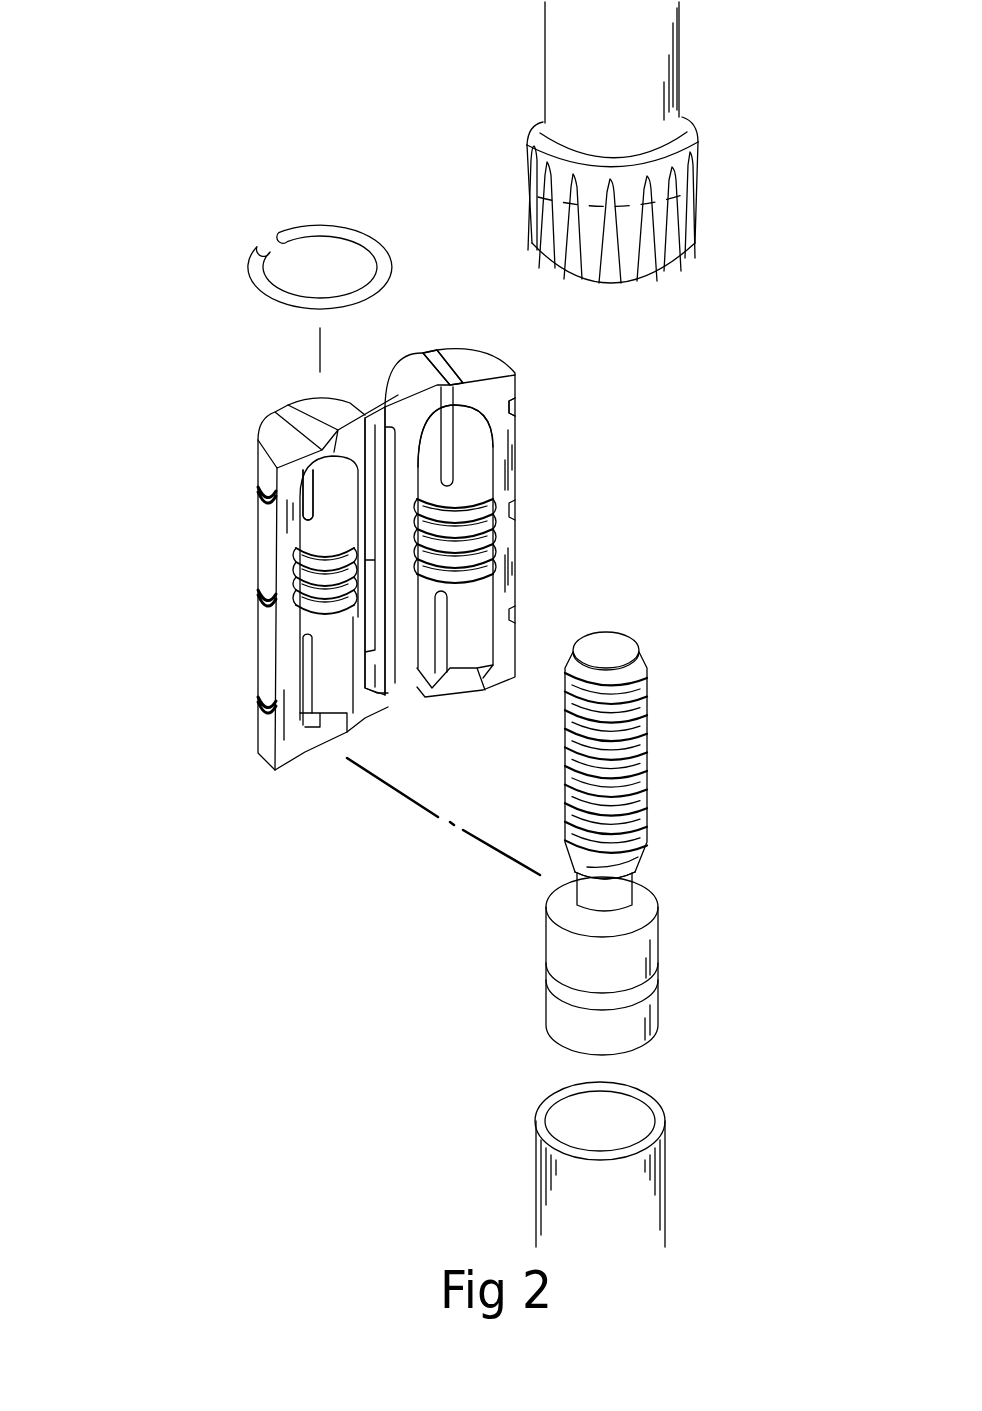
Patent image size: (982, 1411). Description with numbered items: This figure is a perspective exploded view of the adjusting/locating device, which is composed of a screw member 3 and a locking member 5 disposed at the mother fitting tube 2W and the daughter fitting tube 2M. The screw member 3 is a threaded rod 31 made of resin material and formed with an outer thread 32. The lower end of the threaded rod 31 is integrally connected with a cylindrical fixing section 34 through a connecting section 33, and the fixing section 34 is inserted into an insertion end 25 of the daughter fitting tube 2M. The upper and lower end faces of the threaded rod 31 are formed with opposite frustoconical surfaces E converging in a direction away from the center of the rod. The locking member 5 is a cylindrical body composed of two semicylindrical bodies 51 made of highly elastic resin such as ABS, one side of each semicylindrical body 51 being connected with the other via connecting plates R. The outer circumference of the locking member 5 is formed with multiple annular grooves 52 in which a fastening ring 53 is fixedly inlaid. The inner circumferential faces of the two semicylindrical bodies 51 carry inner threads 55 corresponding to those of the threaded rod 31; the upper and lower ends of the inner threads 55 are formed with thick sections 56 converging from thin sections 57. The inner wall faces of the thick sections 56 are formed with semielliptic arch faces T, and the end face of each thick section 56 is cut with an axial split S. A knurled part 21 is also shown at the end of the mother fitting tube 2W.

The mother fitting tube 2W is at (708, 67).
The daughter fitting tube 2M is at (595, 1164).
The knurled nut 21 is at (698, 200).
The insertion end 25 is at (657, 1152).
The screw member 3 is at (510, 948).
The threaded rod 31 is at (691, 800).
The outer thread 32 is at (645, 722).
The connecting section 33 is at (615, 895).
The cylindrical fixing section 34 is at (545, 955).
The locking member 5 is at (286, 832).
The semicylindrical body 51 is at (543, 525).
The annular groove 52 is at (257, 488).
The fastening ring 53 is at (337, 228).
The inner thread 55 is at (497, 536).
The thick section 56 is at (511, 410).
The thin section 57 is at (300, 545).
The axial split S is at (443, 362).
The semielliptic arch face T is at (485, 460).
The connecting plate R is at (382, 702).
The frustoconical surface E is at (640, 663).